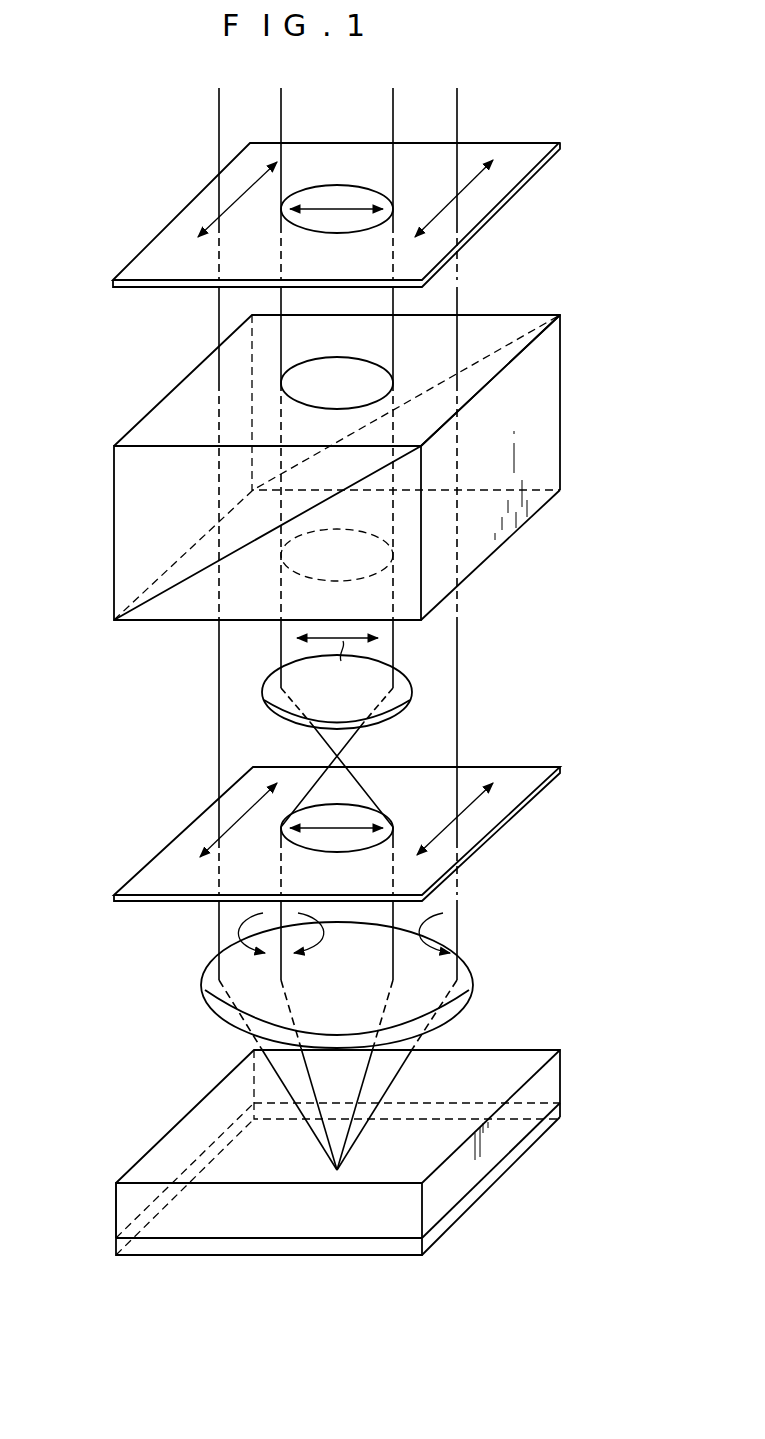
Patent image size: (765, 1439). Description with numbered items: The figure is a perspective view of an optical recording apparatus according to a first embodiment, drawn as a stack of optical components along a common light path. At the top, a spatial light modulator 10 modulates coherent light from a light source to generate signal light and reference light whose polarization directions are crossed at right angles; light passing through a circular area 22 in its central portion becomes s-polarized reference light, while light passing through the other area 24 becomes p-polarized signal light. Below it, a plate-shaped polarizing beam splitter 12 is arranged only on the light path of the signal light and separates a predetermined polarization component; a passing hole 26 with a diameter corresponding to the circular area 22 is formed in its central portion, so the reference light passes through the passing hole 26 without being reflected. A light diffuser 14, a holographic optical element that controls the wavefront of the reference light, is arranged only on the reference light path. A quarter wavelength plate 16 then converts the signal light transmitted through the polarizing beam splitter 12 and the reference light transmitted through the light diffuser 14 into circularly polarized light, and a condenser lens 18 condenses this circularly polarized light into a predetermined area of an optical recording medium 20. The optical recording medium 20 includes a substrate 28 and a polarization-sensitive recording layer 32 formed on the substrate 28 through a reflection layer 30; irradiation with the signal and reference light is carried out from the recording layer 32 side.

The spatial light modulator 10 is at (601, 136).
The polarizing beam splitter 12 is at (548, 391).
The light diffuser 14 is at (410, 684).
The quarter wavelength plate 16 is at (507, 800).
The condenser lens 18 is at (472, 974).
The optical recording medium 20 is at (601, 1051).
The circular area 22 is at (337, 185).
The other area 24 is at (165, 253).
The passing hole 26 is at (290, 383).
The substrate 28 is at (147, 1247).
The reflection layer 30 is at (400, 1233).
The recording layer 32 is at (118, 1203).